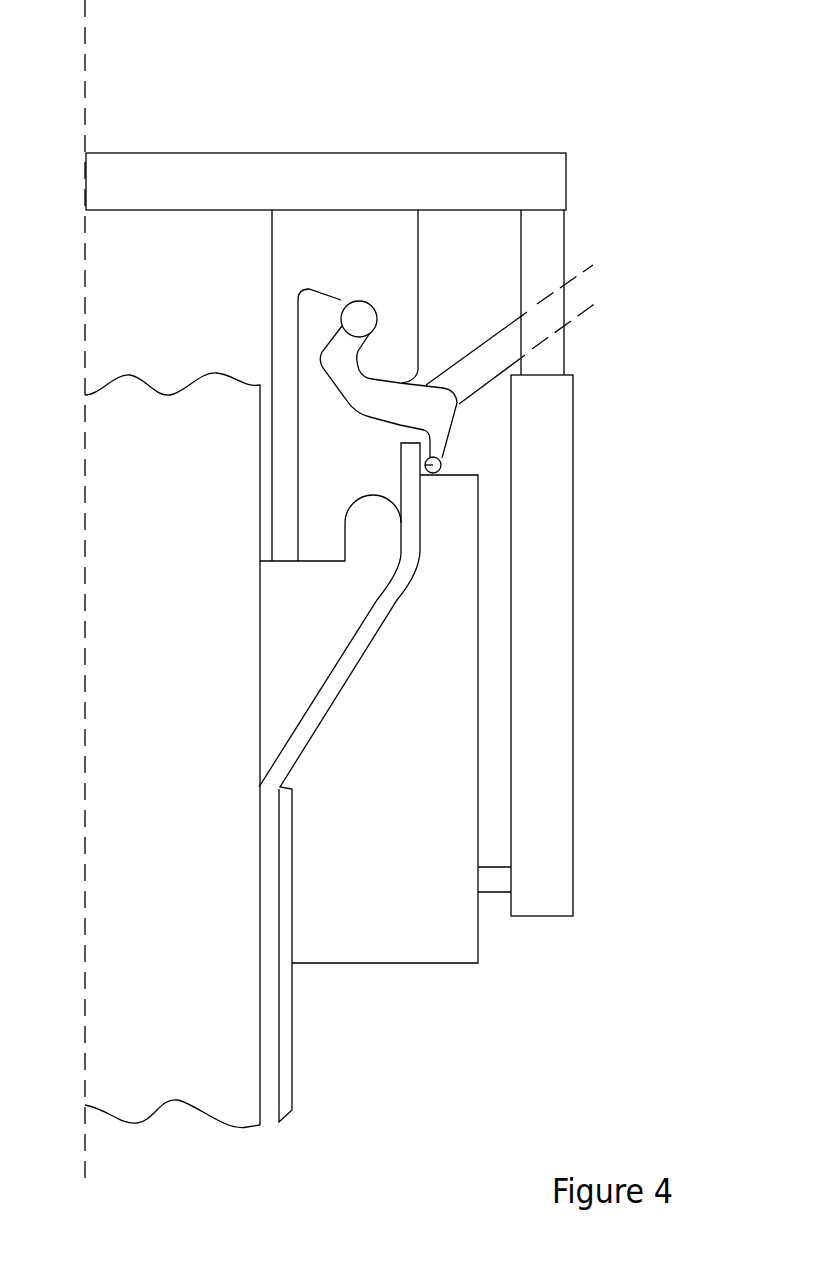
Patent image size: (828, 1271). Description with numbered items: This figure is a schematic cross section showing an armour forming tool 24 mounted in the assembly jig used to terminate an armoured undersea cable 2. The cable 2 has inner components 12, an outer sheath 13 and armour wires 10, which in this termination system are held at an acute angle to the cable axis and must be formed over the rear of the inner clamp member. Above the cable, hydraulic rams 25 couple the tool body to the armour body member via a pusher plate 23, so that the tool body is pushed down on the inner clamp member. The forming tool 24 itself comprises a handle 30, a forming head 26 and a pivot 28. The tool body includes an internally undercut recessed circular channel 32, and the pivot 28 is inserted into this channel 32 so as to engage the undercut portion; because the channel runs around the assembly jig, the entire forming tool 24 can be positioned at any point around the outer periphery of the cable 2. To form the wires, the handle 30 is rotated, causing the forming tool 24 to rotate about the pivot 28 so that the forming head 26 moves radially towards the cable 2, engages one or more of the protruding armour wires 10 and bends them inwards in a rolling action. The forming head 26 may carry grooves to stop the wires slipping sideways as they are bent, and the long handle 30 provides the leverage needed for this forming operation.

The armoured undersea cable 2 is at (322, 1092).
The armour wires 10 is at (270, 995).
The inner components 12 is at (187, 1068).
The outer sheath 13 is at (283, 1037).
The pusher plate 23 is at (148, 168).
The armour forming tool 24 is at (474, 343).
The hydraulic rams 25 is at (548, 890).
The forming head 26 is at (443, 464).
The pivot 28 is at (360, 316).
The handle 30 is at (500, 365).
The internally undercut recessed circular channel 32 is at (390, 295).